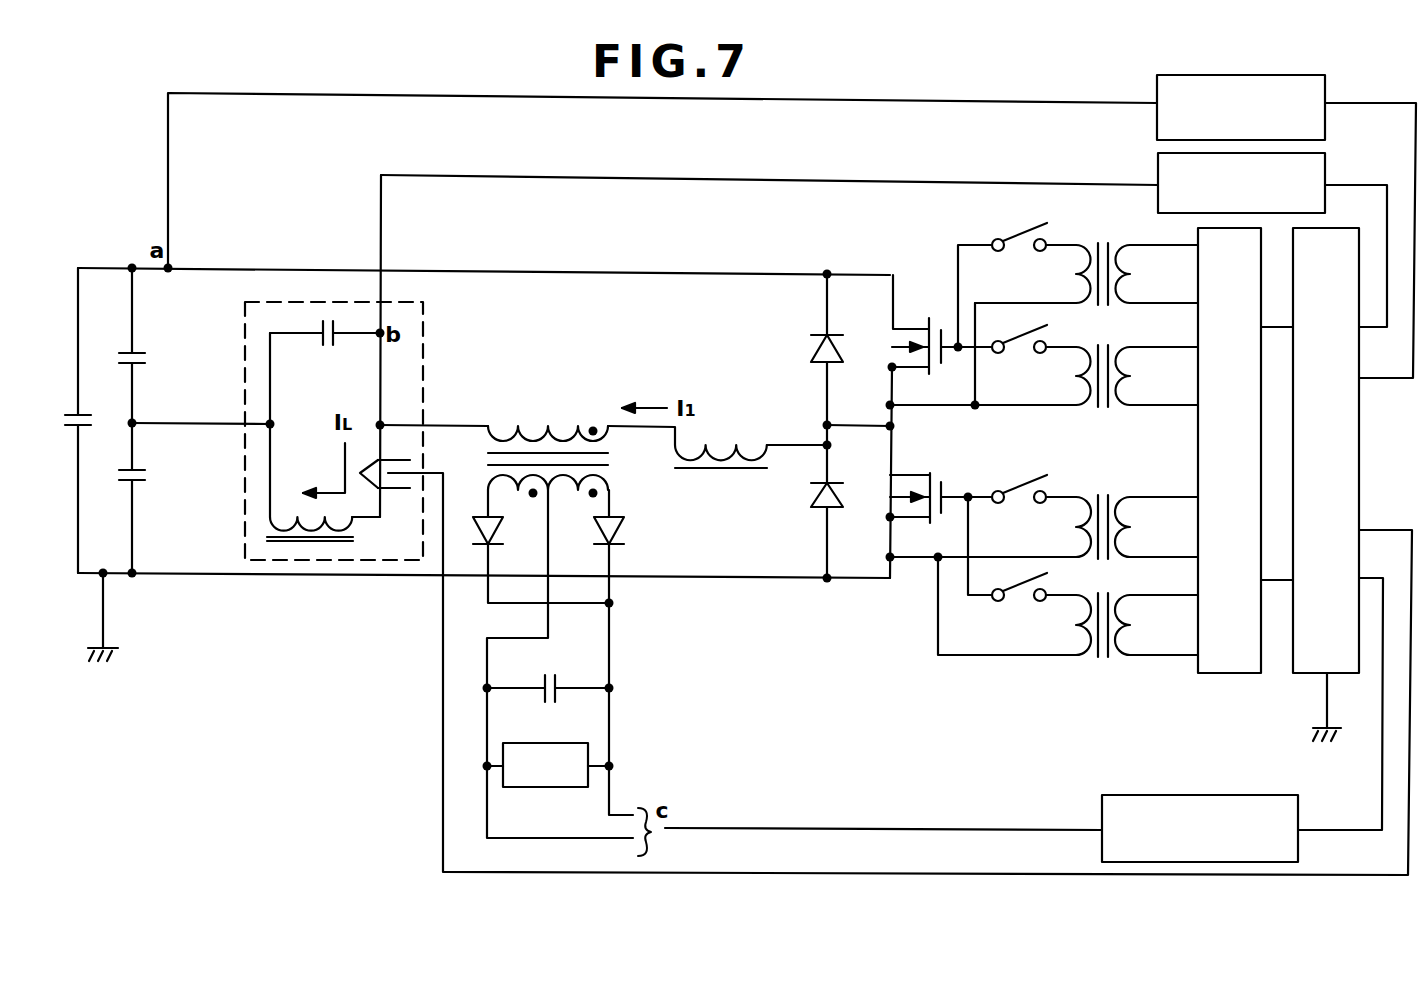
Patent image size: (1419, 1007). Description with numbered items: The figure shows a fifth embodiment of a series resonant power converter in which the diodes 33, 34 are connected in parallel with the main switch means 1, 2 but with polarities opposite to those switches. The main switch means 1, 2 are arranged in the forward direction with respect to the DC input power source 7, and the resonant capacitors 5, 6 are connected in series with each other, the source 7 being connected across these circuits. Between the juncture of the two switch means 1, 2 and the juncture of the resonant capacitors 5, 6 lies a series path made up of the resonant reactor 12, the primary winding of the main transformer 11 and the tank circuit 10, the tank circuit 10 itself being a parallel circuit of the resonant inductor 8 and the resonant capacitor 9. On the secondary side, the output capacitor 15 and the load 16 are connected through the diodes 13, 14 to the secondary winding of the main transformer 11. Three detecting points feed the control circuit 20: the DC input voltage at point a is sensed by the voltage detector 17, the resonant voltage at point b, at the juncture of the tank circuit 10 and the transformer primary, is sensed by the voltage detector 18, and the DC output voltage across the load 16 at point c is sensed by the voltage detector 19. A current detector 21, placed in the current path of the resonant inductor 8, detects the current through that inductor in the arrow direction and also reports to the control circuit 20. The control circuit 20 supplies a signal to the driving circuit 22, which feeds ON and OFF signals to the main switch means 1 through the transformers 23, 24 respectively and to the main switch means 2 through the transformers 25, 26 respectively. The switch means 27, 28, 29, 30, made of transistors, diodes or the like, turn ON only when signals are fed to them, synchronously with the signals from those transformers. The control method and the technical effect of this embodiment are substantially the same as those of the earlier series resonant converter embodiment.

The main switch means 1 is at (919, 316).
The second switch means 2 is at (921, 470).
The resonant capacitor 5 is at (148, 352).
The resonant capacitor 6 is at (150, 486).
The DC input power source 7 is at (90, 410).
The resonant inductor 8 is at (293, 512).
The resonant capacitor 9 is at (328, 348).
The tank circuit 10 is at (425, 332).
The main transformer 11 is at (616, 458).
The resonant reactor 12 is at (726, 440).
The diode 13 is at (503, 528).
The diode 14 is at (624, 528).
The output capacitor 15 is at (552, 672).
The load 16 is at (560, 743).
The voltage detector 17 is at (1325, 82).
The voltage detector 18 is at (1325, 160).
The voltage detector 19 is at (1272, 795).
The control circuit 20 is at (1360, 462).
The current detector 21 is at (396, 494).
The driving circuit 22 is at (1210, 675).
The transformer 23 is at (1106, 244).
The transformer 24 is at (1100, 416).
The transformer 25 is at (1103, 496).
The transformer 26 is at (1100, 660).
The switch means 27 is at (1018, 232).
The switch means 28 is at (1024, 345).
The switch means 29 is at (1022, 480).
The switch means 30 is at (1016, 595).
The diode 33 is at (813, 350).
The diode 34 is at (810, 500).